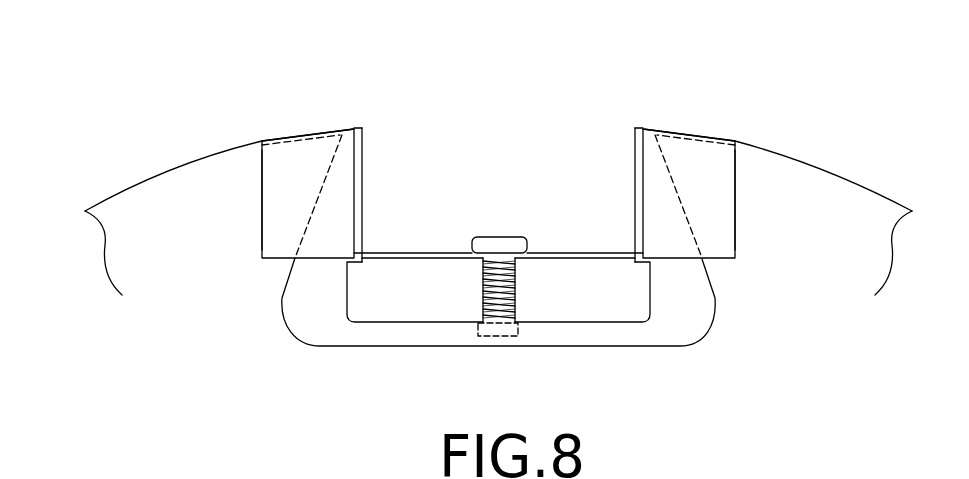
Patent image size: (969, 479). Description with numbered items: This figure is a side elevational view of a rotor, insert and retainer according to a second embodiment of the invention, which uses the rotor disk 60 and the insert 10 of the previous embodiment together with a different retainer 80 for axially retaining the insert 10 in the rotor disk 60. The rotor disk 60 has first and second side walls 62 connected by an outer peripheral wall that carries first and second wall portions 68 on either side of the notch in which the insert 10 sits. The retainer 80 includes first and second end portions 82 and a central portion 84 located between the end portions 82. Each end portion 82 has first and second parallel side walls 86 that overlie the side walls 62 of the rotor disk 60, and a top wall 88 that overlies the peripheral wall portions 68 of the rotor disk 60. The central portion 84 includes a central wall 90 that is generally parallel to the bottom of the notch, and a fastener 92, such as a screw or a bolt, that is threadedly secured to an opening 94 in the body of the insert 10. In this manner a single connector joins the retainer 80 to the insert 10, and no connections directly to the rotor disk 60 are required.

The insert 10 is at (320, 328).
The rotor disk 60 is at (100, 183).
The side walls 62 is at (203, 306).
The wall portions 68 is at (322, 133).
The retainer 80 is at (353, 113).
The end portions 82 is at (263, 127).
The central portion 84 is at (560, 233).
The side walls 86 is at (287, 200).
The top wall 88 is at (295, 132).
The central wall 90 is at (400, 250).
The fastener 92 is at (500, 240).
The opening 94 is at (517, 330).